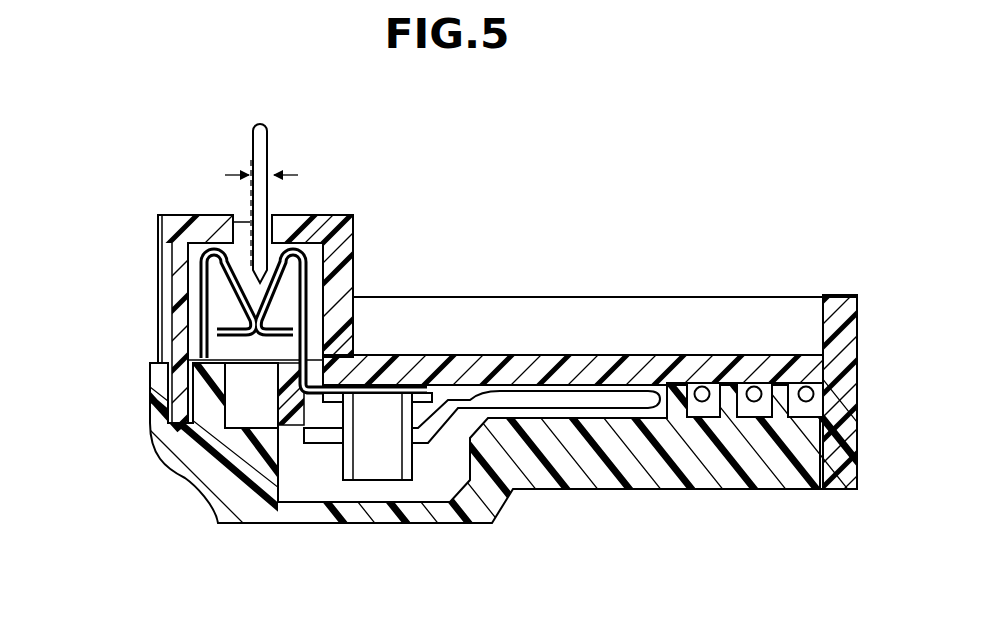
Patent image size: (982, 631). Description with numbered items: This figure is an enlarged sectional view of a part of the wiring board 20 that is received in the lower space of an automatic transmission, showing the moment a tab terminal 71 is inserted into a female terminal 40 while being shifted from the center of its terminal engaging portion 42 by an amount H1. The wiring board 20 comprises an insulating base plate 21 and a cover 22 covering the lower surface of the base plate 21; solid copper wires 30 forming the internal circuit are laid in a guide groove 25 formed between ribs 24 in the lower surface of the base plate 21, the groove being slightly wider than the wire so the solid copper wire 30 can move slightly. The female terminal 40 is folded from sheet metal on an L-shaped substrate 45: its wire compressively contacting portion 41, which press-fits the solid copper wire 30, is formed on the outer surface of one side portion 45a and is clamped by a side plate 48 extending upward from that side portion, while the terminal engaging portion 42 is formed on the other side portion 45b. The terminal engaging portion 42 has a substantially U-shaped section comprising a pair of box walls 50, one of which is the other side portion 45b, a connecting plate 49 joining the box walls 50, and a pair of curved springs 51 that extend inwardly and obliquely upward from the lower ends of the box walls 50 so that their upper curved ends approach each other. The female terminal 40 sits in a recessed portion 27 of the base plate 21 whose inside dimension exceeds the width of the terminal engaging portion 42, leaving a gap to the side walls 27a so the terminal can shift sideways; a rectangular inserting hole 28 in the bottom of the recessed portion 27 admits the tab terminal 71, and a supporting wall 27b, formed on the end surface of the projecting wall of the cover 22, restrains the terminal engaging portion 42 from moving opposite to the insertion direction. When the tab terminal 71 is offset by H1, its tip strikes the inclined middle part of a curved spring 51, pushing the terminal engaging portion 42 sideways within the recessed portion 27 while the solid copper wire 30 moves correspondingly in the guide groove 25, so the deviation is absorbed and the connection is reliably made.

The wiring board 20 is at (571, 221).
The base plate 21 is at (673, 355).
The cover 22 is at (543, 492).
The ribs 24 is at (690, 407).
The guide groove 25 is at (708, 410).
The recessed portion 27 is at (353, 232).
The side walls 27a is at (357, 253).
The supporting wall 27b is at (168, 393).
The inserting hole 28 is at (233, 222).
The solid copper wire 30 is at (600, 396).
The female terminal 40 is at (341, 454).
The wire compressively contacting portion 41 is at (378, 483).
The terminal engaging portion 42 is at (186, 263).
The substrate 45 is at (443, 360).
The side portion 45a is at (503, 357).
The other side portion 45b is at (323, 356).
The side plate 48 is at (353, 290).
The connecting plate 49 is at (300, 340).
The box walls 50 is at (160, 363).
The curved springs 51 is at (290, 253).
The tab terminal 71 is at (267, 133).
The shift amount H1 is at (267, 158).